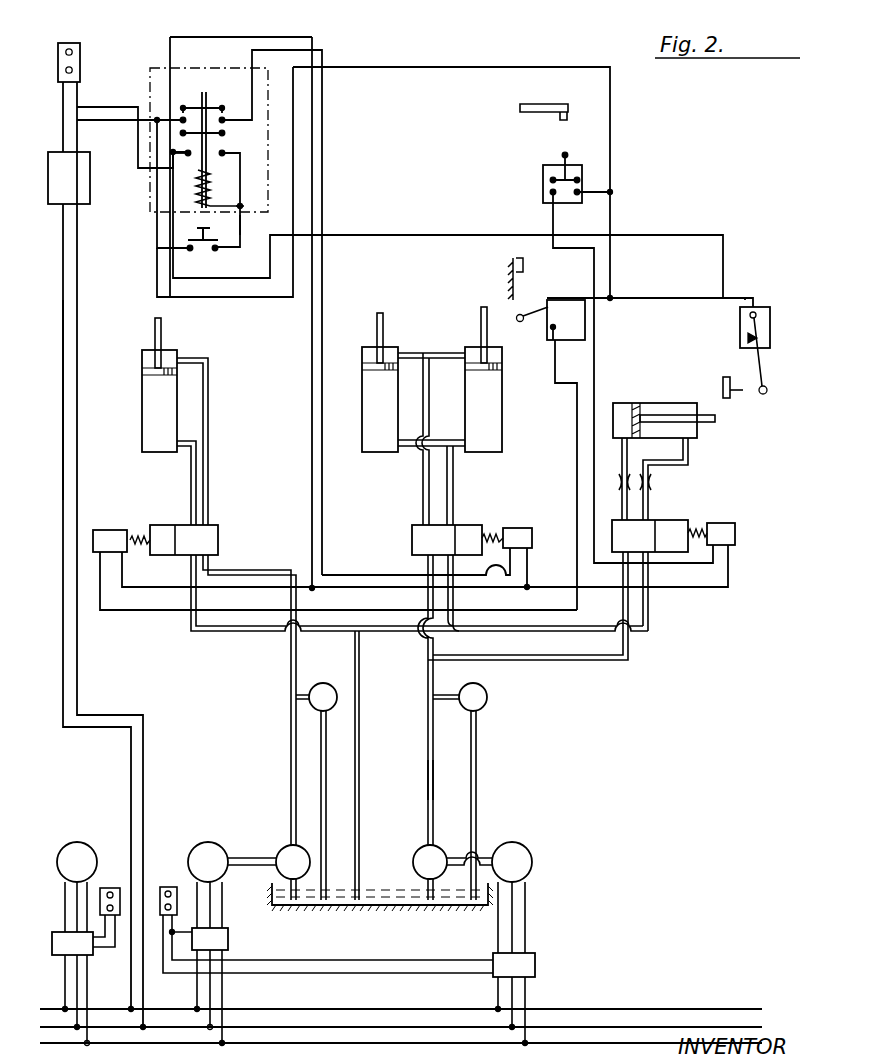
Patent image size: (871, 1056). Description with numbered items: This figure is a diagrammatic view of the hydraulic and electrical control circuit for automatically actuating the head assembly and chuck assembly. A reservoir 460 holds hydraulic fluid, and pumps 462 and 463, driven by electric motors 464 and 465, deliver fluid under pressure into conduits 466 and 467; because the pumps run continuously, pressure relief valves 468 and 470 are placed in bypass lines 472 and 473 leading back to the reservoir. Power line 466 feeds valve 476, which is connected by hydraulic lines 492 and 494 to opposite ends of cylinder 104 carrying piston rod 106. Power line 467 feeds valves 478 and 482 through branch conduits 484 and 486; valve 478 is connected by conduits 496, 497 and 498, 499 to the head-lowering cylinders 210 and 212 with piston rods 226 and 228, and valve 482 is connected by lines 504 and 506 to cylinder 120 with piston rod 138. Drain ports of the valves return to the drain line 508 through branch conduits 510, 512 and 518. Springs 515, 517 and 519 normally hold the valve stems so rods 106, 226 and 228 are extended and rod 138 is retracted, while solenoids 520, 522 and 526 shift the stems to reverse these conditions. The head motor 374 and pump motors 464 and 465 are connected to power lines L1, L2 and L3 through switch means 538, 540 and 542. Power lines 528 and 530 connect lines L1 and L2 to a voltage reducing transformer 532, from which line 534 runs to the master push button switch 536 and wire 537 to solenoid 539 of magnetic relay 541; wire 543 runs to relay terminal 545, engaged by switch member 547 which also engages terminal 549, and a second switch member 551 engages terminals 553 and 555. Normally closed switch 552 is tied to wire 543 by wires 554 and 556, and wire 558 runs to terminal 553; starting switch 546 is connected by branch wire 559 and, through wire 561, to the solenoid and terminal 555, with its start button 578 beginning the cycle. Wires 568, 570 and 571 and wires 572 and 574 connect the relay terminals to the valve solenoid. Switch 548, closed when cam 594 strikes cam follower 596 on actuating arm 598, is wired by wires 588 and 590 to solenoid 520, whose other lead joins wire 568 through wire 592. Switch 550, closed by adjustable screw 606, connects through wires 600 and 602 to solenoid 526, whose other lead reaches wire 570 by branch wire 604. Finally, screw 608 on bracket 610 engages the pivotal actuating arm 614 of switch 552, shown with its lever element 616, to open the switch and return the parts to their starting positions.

The electric power line L1 is at (391, 1007).
The electric power line L2 is at (391, 1025).
The electric power line L3 is at (391, 1043).
The master start and stop push button switch 536 is at (80, 56).
The line 534 is at (62, 122).
The power line 530 is at (75, 412).
The power line 528 is at (63, 413).
The voltage reducing transformer 532 is at (52, 190).
The wire 537 is at (102, 107).
The wire 543 is at (108, 122).
The branch wire 559 is at (160, 248).
The wire 554 is at (222, 297).
The terminal 549 is at (247, 37).
The wire 568 is at (311, 360).
The wire 572 is at (323, 275).
The magnetic relay 541 is at (250, 147).
The terminal 545 is at (190, 107).
The switch member 547 is at (212, 107).
The second switch member 551 is at (225, 130).
The terminal 553 is at (188, 153).
The terminal 555 is at (225, 156).
The solenoid 539 is at (212, 188).
The wire 561 is at (243, 207).
The starting switch 546 is at (245, 225).
The start button 578 is at (197, 228).
The wire 558 is at (231, 273).
The wire 588 is at (585, 297).
The wire 600 is at (590, 190).
The switch 550 is at (587, 197).
The adjustable screw 606 is at (563, 120).
The wire 602 is at (596, 352).
The switch 548 is at (585, 318).
The cam 594 is at (525, 270).
The cam follower 596 is at (517, 314).
The switch actuating arm 598 is at (527, 322).
The switch 552 is at (770, 318).
The wire 556 is at (745, 298).
The switch lever 616 is at (766, 396).
The pivotal actuating arm 614 is at (749, 338).
The bracket 610 is at (723, 378).
The screw 608 is at (733, 400).
The hydraulic cylinder 120 is at (622, 403).
The piston rod 138 is at (667, 413).
The hydraulic line 504 is at (620, 500).
The hydraulic line 506 is at (648, 502).
The valve 482 is at (618, 533).
The spring means 519 is at (700, 530).
The solenoid 526 is at (735, 535).
The branch wire 604 is at (730, 575).
The branch conduit 486 is at (598, 660).
The branch conduit 518 is at (650, 613).
The hydraulic cylinder 104 is at (155, 452).
The piston rod 106 is at (155, 327).
The hydraulic line 494 is at (208, 423).
The hydraulic line 492 is at (191, 493).
The valve 476 is at (218, 527).
The spring means 515 is at (142, 532).
The solenoid 520 is at (103, 530).
The wire 590 is at (258, 610).
The wire 592 is at (157, 587).
The branch conduit 510 is at (193, 627).
The branch conduit 512 is at (476, 633).
The conduit 466 is at (291, 770).
The hydraulic cylinder 210 is at (383, 443).
The piston rod 226 is at (375, 320).
The hydraulic cylinder 212 is at (500, 423).
The piston rod 228 is at (480, 320).
The conduit 497 is at (433, 348).
The conduit 499 is at (410, 446).
The conduit 496 is at (418, 505).
The conduit 498 is at (453, 482).
The valve 478 is at (443, 540).
The spring means 517 is at (487, 538).
The solenoid 522 is at (517, 527).
The wire 571 is at (530, 575).
The wire 574 is at (416, 578).
The wire 570 is at (386, 590).
The branch conduit 484 is at (423, 652).
The conduit 467 is at (428, 780).
The drain line 508 is at (360, 723).
The pressure relief valve 468 is at (325, 683).
The bypass line 472 is at (300, 702).
The pressure relief valve 470 is at (488, 698).
The bypass line 473 is at (452, 705).
The electric motor 374 is at (78, 840).
The switch means 538 is at (83, 940).
The electric motor 464 is at (210, 842).
The switch means 540 is at (228, 937).
The pump 462 is at (280, 847).
The pump 463 is at (418, 848).
The electric motor 465 is at (515, 842).
The switch means 542 is at (537, 955).
The reservoir 460 is at (348, 910).